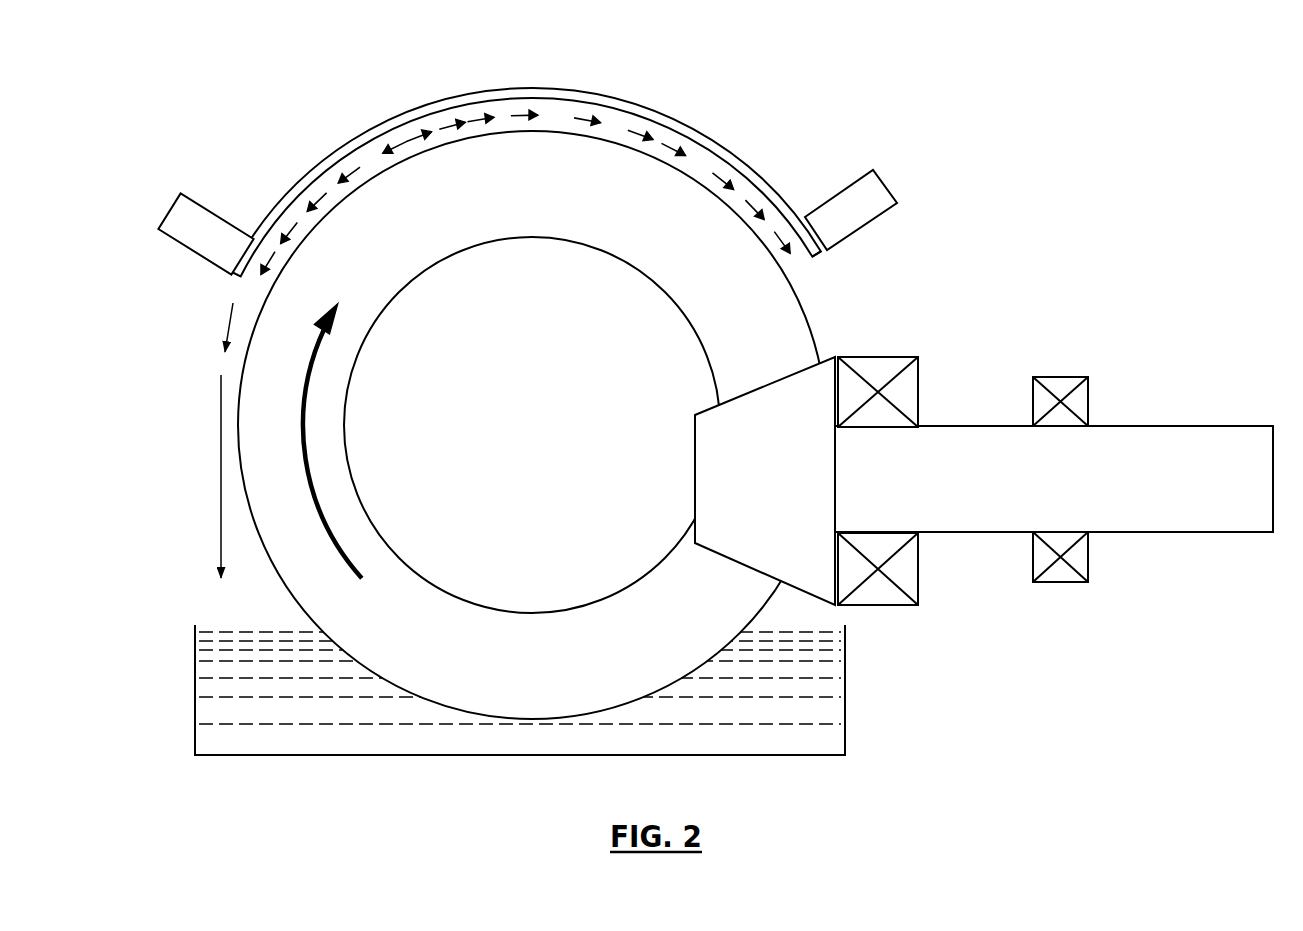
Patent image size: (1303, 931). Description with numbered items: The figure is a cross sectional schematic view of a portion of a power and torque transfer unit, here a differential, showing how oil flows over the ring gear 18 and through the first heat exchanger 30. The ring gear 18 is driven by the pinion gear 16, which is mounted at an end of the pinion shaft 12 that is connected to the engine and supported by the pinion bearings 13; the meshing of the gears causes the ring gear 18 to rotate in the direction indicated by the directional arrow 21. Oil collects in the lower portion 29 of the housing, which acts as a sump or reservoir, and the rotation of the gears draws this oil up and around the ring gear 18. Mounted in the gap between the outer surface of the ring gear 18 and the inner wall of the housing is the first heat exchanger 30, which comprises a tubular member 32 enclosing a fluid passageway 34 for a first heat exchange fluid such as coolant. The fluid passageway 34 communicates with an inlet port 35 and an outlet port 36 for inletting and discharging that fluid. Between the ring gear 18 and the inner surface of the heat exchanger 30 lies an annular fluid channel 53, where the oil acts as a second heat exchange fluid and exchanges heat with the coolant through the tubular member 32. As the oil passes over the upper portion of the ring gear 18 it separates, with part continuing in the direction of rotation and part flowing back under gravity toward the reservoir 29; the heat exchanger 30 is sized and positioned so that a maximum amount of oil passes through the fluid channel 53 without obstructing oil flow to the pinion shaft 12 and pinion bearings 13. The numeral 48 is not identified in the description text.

The pinion shaft 12 is at (1135, 534).
The pinion bearings 13 is at (893, 357).
The pinion gear 16 is at (815, 597).
The ring gear 18 is at (787, 315).
The directional arrow 21 is at (310, 472).
The lower portion 29 is at (352, 736).
The first heat exchanger 30 is at (743, 104).
The tubular member 32 is at (237, 282).
The fluid passageway 34 is at (476, 97).
The inlet port 35 is at (210, 206).
The outlet port 36 is at (836, 193).
The gap flow 48 is at (330, 157).
The fluid channel 53 is at (806, 264).